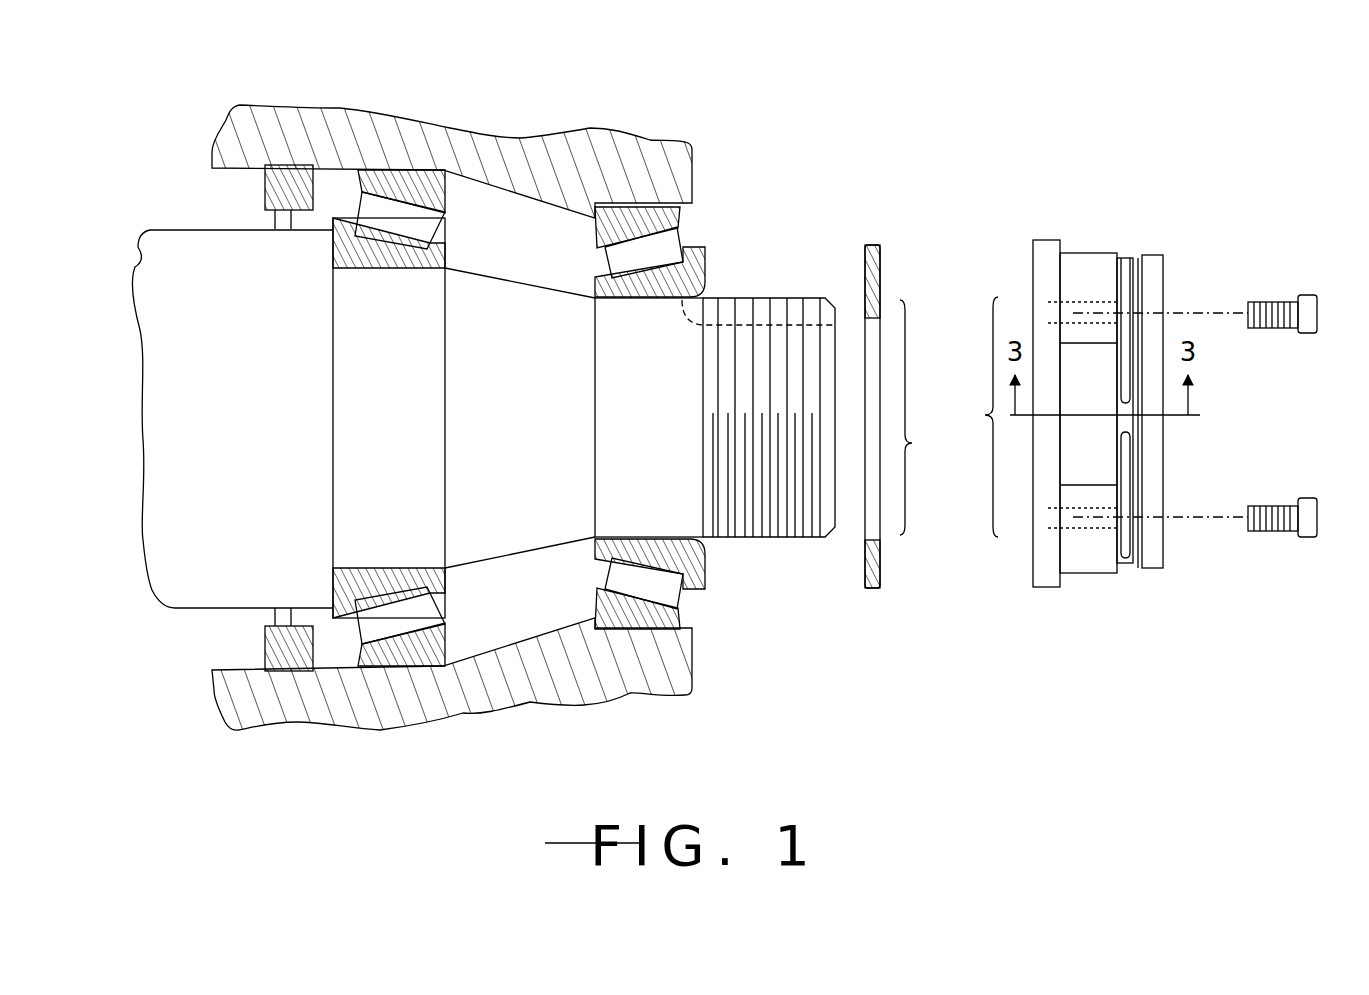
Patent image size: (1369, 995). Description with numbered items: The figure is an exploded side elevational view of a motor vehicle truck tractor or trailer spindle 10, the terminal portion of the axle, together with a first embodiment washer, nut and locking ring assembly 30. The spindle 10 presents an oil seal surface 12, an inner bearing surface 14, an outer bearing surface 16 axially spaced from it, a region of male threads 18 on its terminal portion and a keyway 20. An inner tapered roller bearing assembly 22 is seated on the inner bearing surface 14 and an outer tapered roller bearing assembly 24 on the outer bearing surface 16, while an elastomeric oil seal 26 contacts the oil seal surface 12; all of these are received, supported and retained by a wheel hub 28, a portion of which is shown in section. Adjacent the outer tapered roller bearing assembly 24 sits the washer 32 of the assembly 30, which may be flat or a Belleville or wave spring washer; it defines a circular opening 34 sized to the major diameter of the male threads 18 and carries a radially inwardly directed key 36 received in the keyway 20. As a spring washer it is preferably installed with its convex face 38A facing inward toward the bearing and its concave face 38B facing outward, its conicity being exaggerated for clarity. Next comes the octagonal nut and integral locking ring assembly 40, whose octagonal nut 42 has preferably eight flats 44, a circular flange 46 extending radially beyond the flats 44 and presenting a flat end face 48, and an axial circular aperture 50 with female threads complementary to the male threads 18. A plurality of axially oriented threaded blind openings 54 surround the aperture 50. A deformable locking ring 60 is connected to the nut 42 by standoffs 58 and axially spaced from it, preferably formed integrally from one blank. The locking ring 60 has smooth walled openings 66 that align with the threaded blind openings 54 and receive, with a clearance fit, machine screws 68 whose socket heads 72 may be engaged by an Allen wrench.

The spindle 10 is at (765, 177).
The oil seal surface 12 is at (195, 227).
The inner bearing surface 14 is at (388, 270).
The outer bearing surface 16 is at (650, 300).
The male threads 18 is at (770, 538).
The keyway 20 is at (752, 313).
The inner tapered roller bearing assembly 22 is at (396, 220).
The outer tapered roller bearing assembly 24 is at (677, 240).
The elastomeric oil seal 26 is at (270, 646).
The wheel hub 28 is at (503, 157).
The washer, nut and locking ring assembly 30 is at (1117, 100).
The washer 32 is at (877, 592).
The circular opening 34 is at (926, 417).
The key 36 is at (850, 347).
The convex face 38A is at (863, 278).
The concave face 38B is at (882, 553).
The octagonal nut and integral locking ring assembly 40 is at (1228, 248).
The octagonal nut 42 is at (1120, 258).
The flats 44 is at (1092, 570).
The circular flange 46 is at (1048, 245).
The end face 48 is at (1030, 265).
The axial circular aperture 50 is at (974, 417).
The threaded blind openings 54 is at (1080, 300).
The standoffs 58 is at (1140, 425).
The deformable locking ring 60 is at (1148, 570).
The smooth walled openings 66 is at (1178, 297).
The machine screws 68 is at (1268, 505).
The socket heads 72 is at (1310, 315).